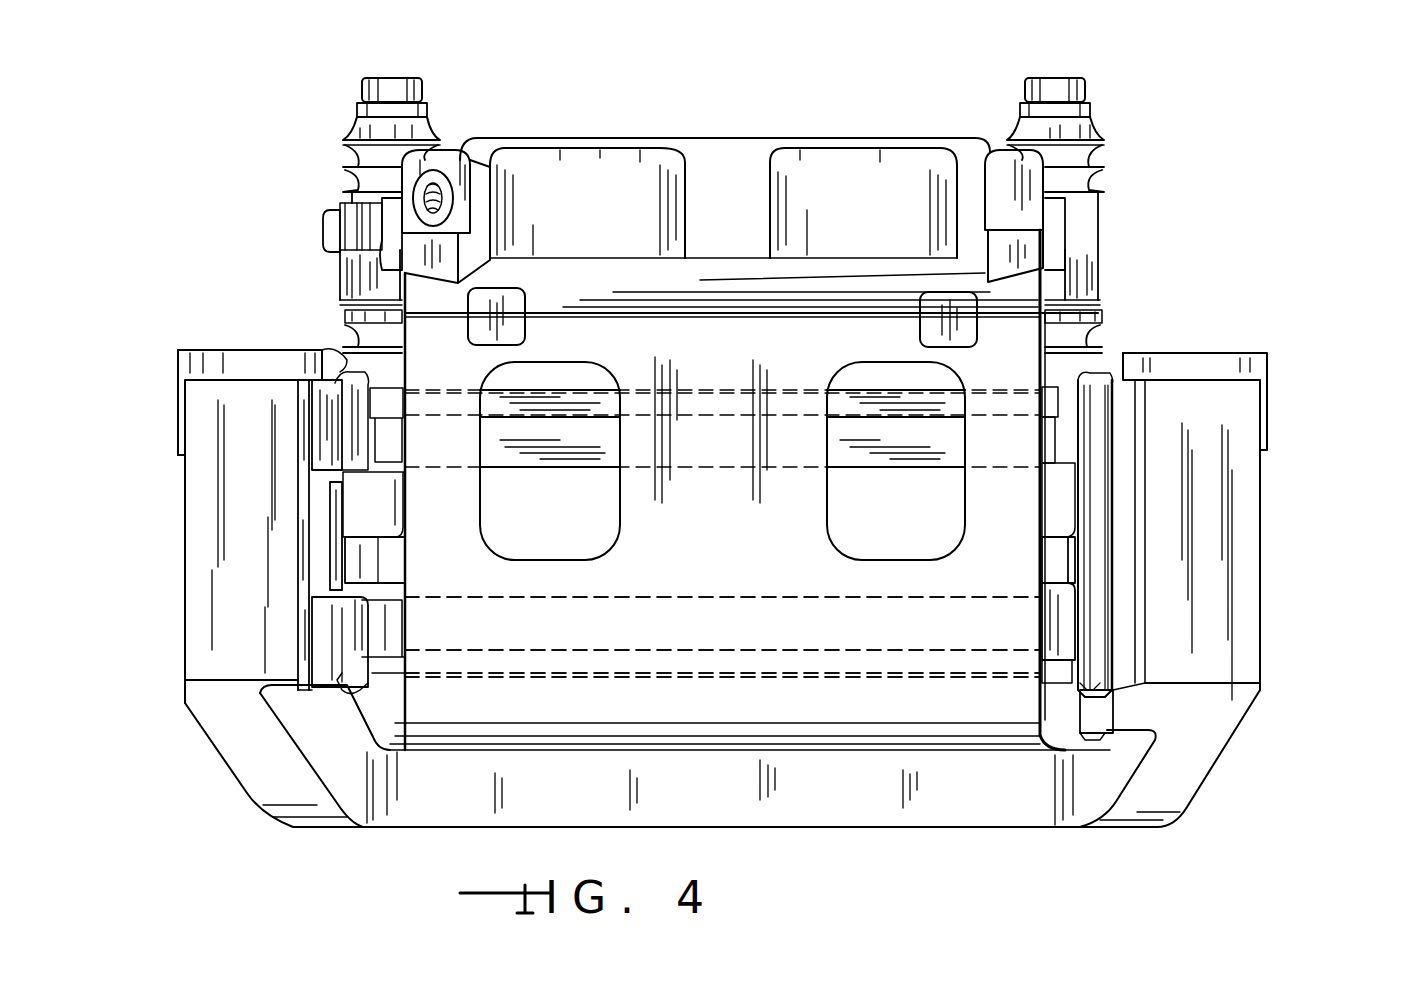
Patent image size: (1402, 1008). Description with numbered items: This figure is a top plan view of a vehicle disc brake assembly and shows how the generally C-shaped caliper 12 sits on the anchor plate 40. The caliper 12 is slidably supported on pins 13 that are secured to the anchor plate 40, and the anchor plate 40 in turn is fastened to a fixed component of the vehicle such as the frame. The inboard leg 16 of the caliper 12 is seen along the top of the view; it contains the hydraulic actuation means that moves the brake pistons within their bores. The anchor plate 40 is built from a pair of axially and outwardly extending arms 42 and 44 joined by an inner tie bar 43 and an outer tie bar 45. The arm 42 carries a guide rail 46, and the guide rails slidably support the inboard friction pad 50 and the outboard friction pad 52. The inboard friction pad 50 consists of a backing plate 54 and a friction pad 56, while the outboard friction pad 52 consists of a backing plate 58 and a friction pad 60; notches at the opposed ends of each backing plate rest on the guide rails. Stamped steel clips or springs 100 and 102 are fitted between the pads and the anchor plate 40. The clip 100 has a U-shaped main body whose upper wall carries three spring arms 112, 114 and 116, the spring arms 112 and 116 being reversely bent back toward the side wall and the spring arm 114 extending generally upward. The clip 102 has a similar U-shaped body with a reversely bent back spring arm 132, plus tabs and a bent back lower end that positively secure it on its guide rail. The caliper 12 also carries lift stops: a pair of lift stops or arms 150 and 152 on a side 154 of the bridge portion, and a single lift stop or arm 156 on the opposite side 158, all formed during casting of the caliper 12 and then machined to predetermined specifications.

The caliper 12 is at (737, 528).
The pins 13 is at (428, 88).
The inboard leg 16 is at (623, 137).
The anchor plate 40 is at (1262, 688).
The arm 42 is at (227, 640).
The inner tie bar 43 is at (1178, 363).
The arm 44 is at (1245, 543).
The outer tie bar 45 is at (835, 813).
The guide rail 46 is at (303, 585).
The inboard friction pad 50 is at (517, 466).
The outboard friction pad 52 is at (755, 610).
The backing plate 54 is at (567, 407).
The friction pad 56 is at (577, 457).
The backing plate 58 is at (727, 663).
The friction pad 60 is at (633, 600).
The clip 100 is at (309, 478).
The clip 102 is at (1134, 506).
The spring arm 112 is at (353, 633).
The spring arm 114 is at (333, 538).
The spring arm 116 is at (352, 435).
The spring arm 132 is at (1097, 462).
The lift stop 150 is at (1073, 705).
The lift stop 152 is at (1062, 562).
The side 154 is at (1062, 562).
The lift stop 156 is at (387, 568).
The opposite side 158 is at (408, 548).